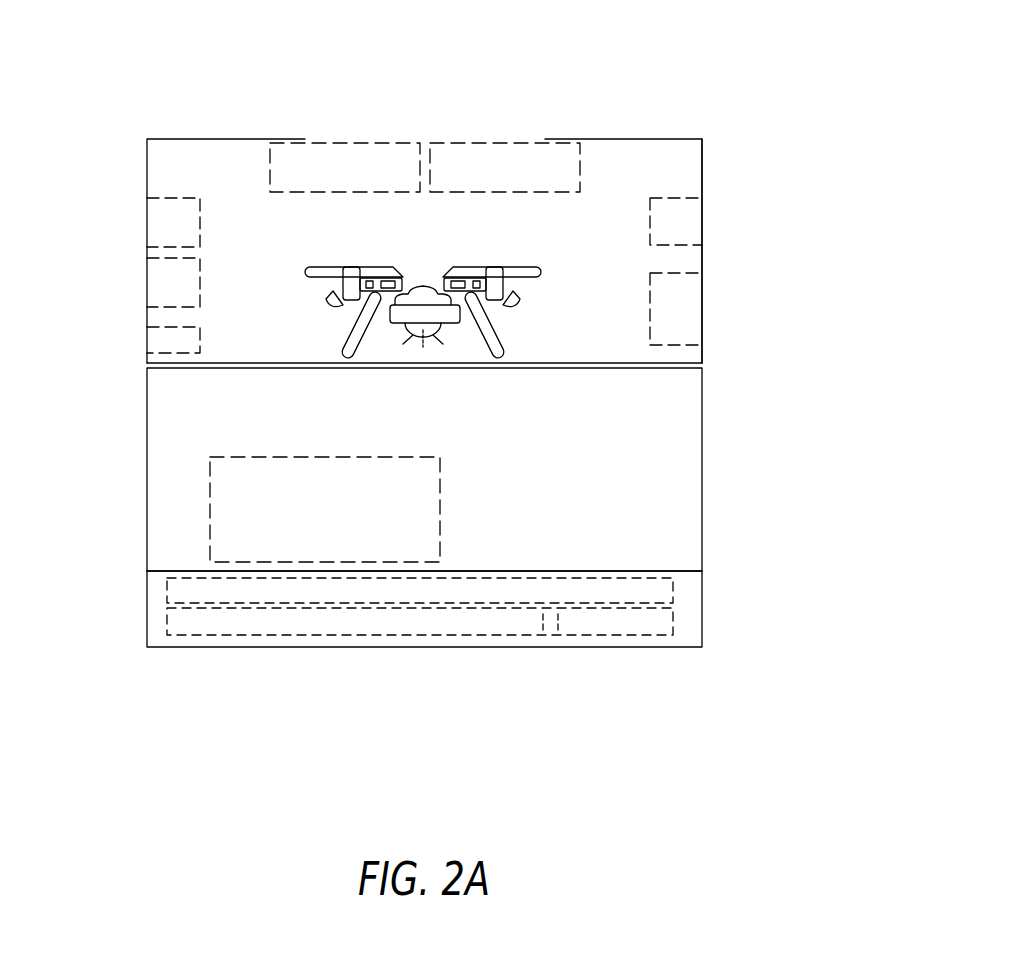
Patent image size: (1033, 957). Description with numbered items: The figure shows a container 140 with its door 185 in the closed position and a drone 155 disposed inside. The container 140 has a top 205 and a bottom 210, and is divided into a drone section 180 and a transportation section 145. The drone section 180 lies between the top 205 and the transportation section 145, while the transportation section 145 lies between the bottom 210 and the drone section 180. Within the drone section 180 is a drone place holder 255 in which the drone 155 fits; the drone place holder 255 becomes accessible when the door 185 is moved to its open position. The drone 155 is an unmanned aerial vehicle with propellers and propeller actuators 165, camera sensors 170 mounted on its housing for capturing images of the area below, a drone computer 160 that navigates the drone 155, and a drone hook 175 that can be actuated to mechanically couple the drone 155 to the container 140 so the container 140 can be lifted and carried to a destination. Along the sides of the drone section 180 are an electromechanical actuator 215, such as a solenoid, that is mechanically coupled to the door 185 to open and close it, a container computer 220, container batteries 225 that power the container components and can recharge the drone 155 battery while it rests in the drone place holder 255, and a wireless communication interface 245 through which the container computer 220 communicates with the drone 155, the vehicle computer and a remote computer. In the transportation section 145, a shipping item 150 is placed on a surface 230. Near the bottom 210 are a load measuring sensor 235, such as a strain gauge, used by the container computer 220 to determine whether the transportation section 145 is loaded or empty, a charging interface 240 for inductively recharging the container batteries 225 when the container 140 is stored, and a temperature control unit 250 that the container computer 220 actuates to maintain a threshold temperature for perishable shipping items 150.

The container 140 is at (745, 157).
The transportation section 145 is at (702, 442).
The shipping item 150 is at (442, 478).
The drone 155 is at (433, 287).
The drone computer 160 is at (457, 340).
The propeller actuators 165 is at (392, 268).
The camera sensors 170 is at (338, 306).
The drone hook 175 is at (420, 342).
The drone section 180 is at (702, 252).
The door 185 is at (470, 192).
The top 205 is at (672, 139).
The bottom 210 is at (677, 648).
The electromechanical actuator 215 is at (198, 220).
The container computer 220 is at (198, 285).
The container batteries 225 is at (652, 310).
The surface 230 is at (527, 571).
The load measuring sensor 235 is at (675, 590).
The charging interface 240 is at (505, 636).
The wireless communication interface 245 is at (198, 333).
The temperature control unit 250 is at (675, 628).
The drone place holder 255 is at (279, 340).